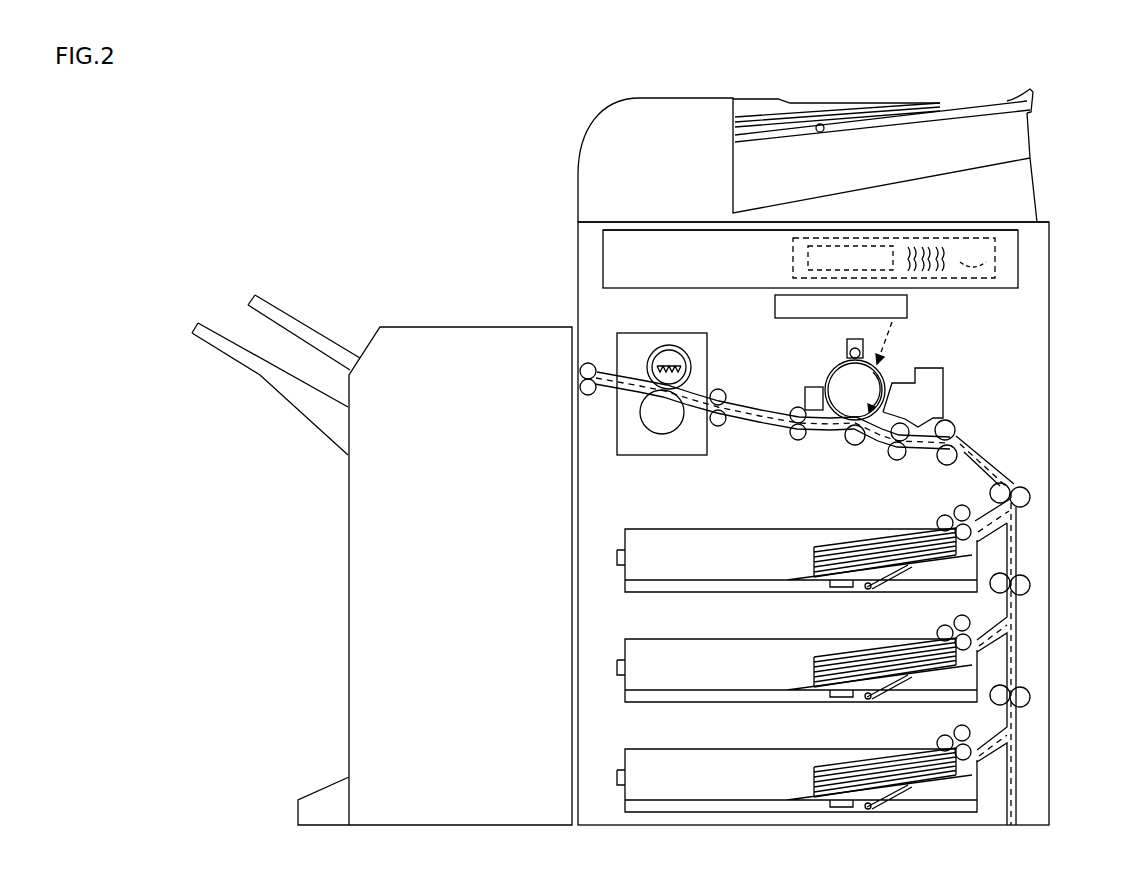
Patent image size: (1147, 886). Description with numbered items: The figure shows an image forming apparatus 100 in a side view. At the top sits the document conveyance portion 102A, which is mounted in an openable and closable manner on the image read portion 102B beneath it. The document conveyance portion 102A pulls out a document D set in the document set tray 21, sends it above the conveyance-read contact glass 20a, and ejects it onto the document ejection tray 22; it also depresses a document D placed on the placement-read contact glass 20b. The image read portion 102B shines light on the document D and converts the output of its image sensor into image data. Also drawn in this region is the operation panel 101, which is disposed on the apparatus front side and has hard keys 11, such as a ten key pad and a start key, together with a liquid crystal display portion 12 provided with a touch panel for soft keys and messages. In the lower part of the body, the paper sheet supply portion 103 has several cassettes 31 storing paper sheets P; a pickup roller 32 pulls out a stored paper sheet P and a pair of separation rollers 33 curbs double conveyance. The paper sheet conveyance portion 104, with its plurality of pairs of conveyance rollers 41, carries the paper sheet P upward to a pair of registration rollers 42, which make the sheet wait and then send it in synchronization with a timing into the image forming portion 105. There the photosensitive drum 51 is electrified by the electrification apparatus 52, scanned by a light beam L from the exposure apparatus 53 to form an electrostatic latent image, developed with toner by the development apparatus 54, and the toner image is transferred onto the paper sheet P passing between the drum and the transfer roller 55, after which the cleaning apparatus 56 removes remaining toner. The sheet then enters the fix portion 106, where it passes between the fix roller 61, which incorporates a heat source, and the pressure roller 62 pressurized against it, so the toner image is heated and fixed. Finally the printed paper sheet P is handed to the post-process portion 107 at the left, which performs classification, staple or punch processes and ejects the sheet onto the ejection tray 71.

The image forming apparatus 100 is at (567, 228).
The document conveyance portion 102A is at (593, 125).
The image read portion 102B is at (590, 268).
The conveyance-read contact glass 20a is at (620, 226).
The placement-read contact glass 20b is at (692, 228).
The liquid crystal display portion 12 is at (793, 259).
The hard keys 11 is at (922, 246).
The operation panel 101 is at (1011, 261).
The document D is at (928, 100).
The document set tray 21 is at (1022, 93).
The document ejection tray 22 is at (872, 183).
The exposure apparatus 53 is at (907, 307).
The light beam L is at (887, 345).
The electrification apparatus 52 is at (848, 344).
The photosensitive drum 51 is at (838, 376).
The cleaning apparatus 56 is at (808, 392).
The development apparatus 54 is at (930, 372).
The image forming portion 105 is at (966, 341).
The transfer roller 55 is at (852, 446).
The pair of registration rollers 42 is at (895, 460).
The fix portion 106 is at (625, 458).
The fix roller 61 is at (668, 346).
The pressure roller 62 is at (664, 432).
The paper sheet conveyance portion 104 is at (1008, 445).
The pairs of conveyance rollers 41 is at (588, 363).
The paper sheet supply portion 103 is at (588, 546).
The cassettes 31 is at (718, 528).
The paper sheet P is at (815, 545).
The pickup roller 32 is at (938, 518).
The pair of separation rollers 33 is at (957, 507).
The post-process portion 107 is at (442, 318).
The ejection tray 71 is at (210, 325).